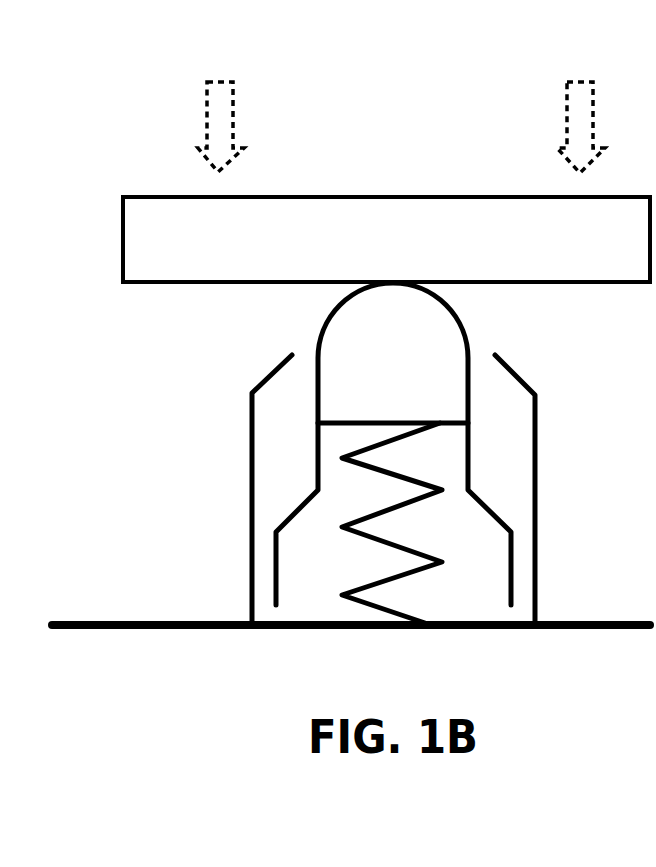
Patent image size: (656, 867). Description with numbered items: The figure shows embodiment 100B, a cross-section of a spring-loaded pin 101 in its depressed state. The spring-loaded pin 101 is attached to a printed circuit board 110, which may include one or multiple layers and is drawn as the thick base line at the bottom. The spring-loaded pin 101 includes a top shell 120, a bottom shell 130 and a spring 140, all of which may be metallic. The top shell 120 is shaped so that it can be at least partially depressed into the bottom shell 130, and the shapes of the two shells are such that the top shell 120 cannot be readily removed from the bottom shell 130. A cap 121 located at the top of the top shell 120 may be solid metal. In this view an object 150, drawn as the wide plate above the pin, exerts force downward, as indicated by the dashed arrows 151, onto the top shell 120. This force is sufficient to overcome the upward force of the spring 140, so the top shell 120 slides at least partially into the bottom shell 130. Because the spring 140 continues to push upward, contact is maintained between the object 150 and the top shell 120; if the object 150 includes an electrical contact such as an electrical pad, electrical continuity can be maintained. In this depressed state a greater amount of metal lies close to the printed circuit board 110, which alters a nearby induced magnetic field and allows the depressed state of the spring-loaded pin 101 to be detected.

The embodiment of a depressed spring-loaded pin 100B is at (72, 135).
The arrows 151 is at (232, 82).
The object 150 is at (429, 195).
The spring-loaded pin 101 is at (232, 373).
The bottom shell 130 is at (286, 360).
The cap 121 is at (415, 372).
The top shell 120 is at (490, 508).
The spring 140 is at (420, 556).
The printed circuit board 110 is at (124, 620).